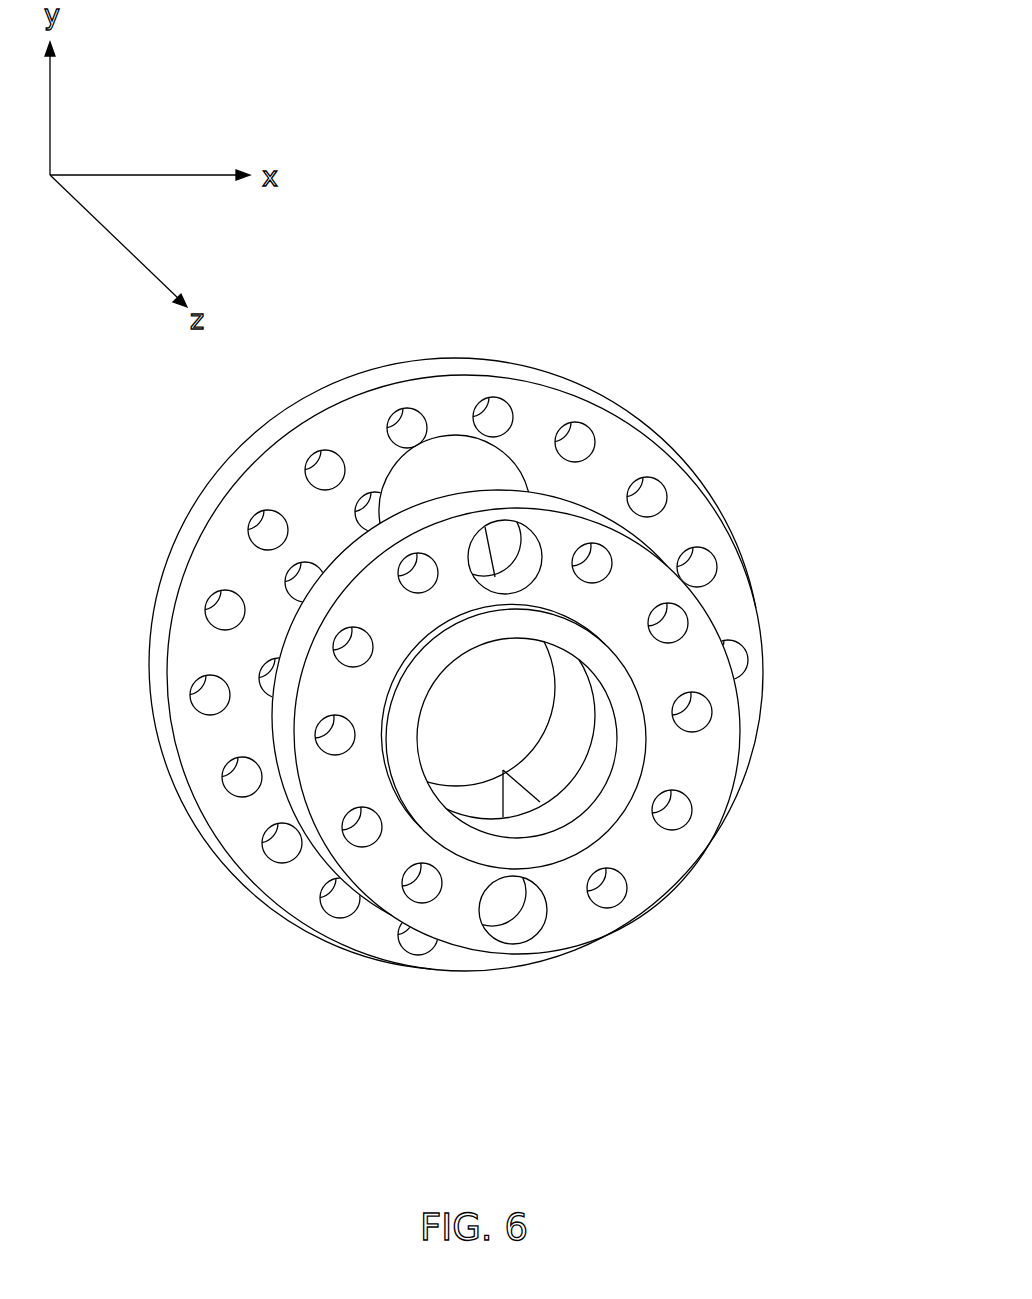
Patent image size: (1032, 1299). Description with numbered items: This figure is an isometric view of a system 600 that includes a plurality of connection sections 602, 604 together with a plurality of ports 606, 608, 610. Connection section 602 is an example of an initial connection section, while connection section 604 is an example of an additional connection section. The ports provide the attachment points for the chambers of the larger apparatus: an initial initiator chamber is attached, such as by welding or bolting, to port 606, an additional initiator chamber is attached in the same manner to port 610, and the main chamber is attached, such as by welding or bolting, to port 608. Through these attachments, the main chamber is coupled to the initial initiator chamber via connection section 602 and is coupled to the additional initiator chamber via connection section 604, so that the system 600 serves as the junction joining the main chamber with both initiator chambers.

The system 600 is at (740, 415).
The connection section 602 is at (437, 465).
The connection section 604 is at (505, 900).
The port 606 is at (528, 553).
The port 608 is at (596, 757).
The port 610 is at (535, 912).